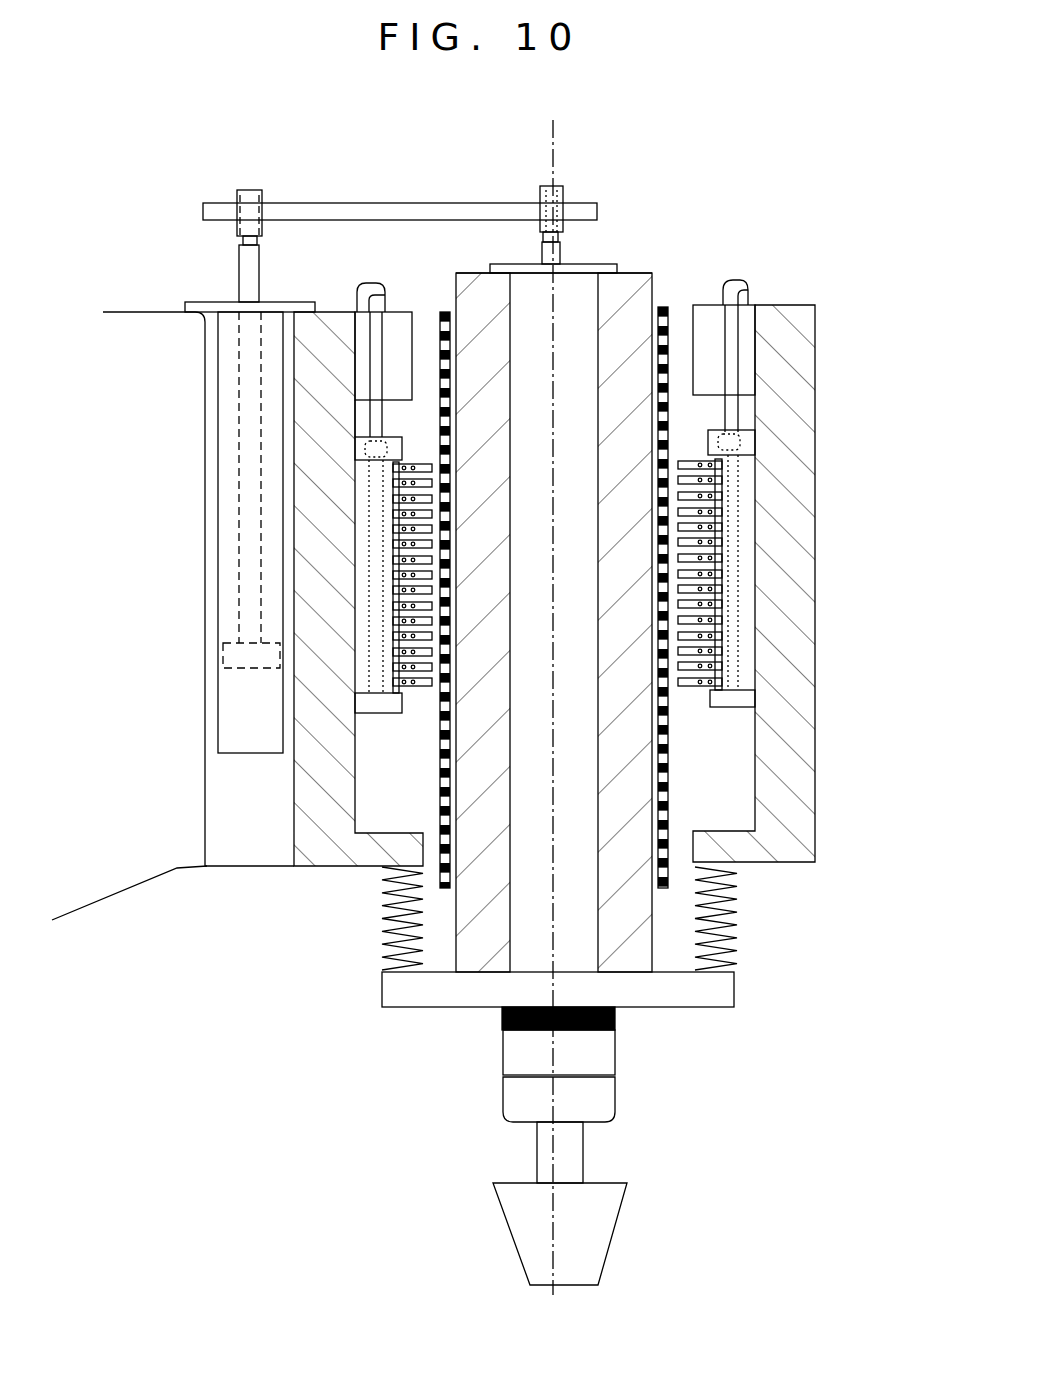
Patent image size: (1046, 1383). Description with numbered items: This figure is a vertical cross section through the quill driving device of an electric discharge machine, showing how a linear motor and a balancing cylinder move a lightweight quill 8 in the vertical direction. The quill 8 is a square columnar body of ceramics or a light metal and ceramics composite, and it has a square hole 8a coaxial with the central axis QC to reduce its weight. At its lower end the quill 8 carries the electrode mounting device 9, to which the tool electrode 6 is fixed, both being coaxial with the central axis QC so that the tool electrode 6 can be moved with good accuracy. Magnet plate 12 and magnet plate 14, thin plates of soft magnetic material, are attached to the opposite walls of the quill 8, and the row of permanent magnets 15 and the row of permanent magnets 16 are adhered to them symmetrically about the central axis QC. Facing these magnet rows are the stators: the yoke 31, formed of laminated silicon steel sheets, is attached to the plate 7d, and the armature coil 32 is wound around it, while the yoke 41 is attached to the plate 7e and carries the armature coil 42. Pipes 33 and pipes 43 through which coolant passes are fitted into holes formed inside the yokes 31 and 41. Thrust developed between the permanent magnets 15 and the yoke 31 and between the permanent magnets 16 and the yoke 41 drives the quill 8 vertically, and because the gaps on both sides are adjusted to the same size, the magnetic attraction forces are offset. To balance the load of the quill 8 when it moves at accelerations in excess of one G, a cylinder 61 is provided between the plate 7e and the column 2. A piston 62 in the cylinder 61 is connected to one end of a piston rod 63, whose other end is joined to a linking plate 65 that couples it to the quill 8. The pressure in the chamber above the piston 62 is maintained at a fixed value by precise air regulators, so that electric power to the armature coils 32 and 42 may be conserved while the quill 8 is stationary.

The central axis QC is at (552, 150).
The linking plate 65 is at (382, 207).
The piston rod 63 is at (237, 287).
The cylinder 61 is at (228, 570).
The piston 62 is at (222, 665).
The column 2 is at (127, 843).
The plate 7e is at (333, 753).
The pipes 43 is at (366, 312).
The yoke 41 is at (360, 543).
The armature coil 42 is at (397, 567).
The row of permanent magnets 16 is at (438, 348).
The magnet plate 14 is at (453, 310).
The magnet plate 12 is at (650, 310).
The row of permanent magnets 15 is at (668, 333).
The pipes 33 is at (740, 327).
The plate 7d is at (780, 448).
The yoke 31 is at (715, 502).
The armature coil 32 is at (712, 632).
The quill 8 is at (635, 878).
The hole 8a is at (588, 888).
The electrode mounting device 9 is at (612, 1053).
The tool electrode 6 is at (590, 1252).